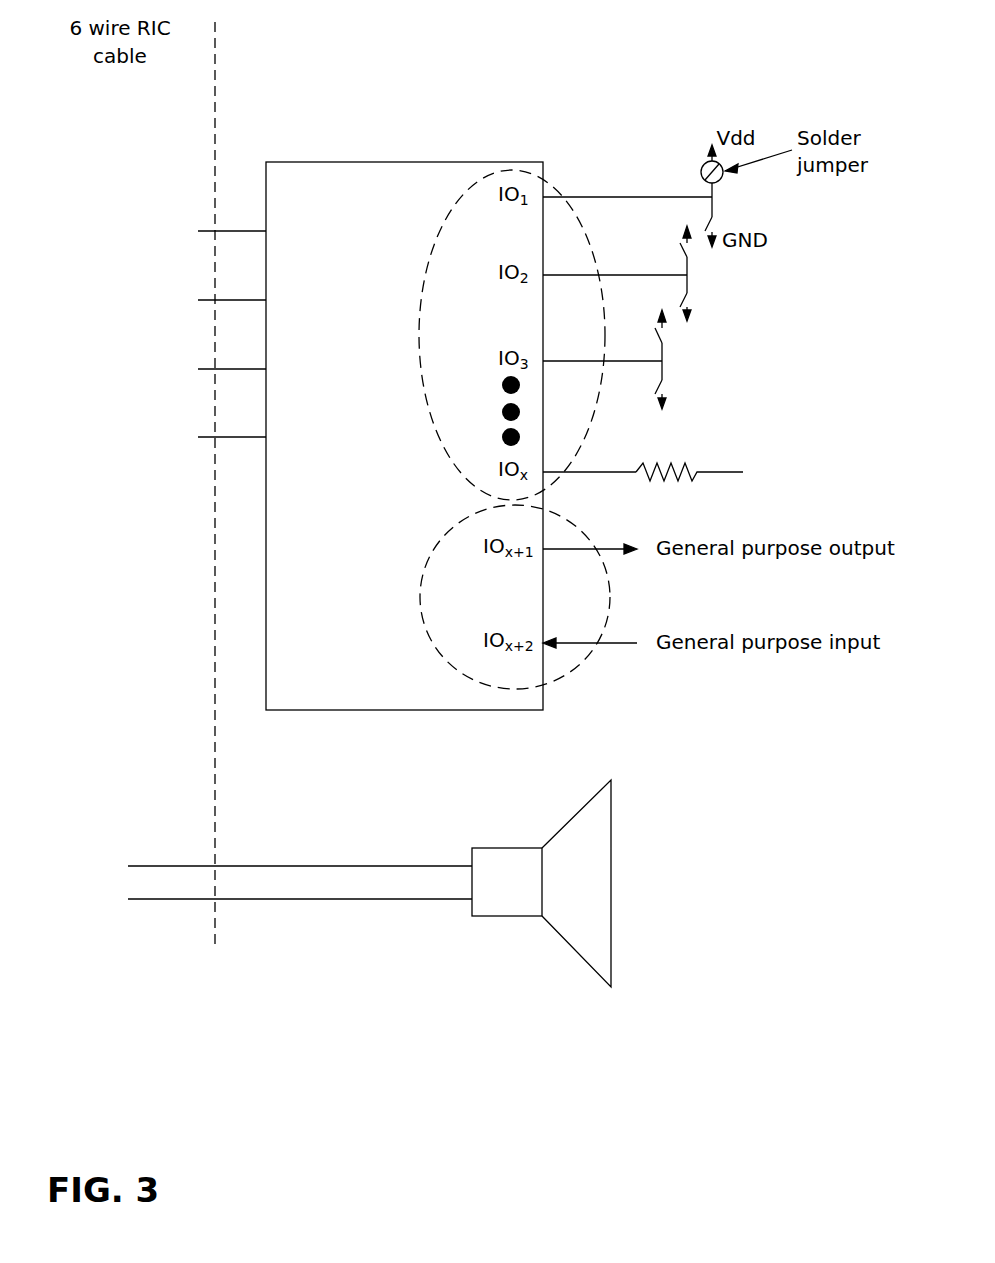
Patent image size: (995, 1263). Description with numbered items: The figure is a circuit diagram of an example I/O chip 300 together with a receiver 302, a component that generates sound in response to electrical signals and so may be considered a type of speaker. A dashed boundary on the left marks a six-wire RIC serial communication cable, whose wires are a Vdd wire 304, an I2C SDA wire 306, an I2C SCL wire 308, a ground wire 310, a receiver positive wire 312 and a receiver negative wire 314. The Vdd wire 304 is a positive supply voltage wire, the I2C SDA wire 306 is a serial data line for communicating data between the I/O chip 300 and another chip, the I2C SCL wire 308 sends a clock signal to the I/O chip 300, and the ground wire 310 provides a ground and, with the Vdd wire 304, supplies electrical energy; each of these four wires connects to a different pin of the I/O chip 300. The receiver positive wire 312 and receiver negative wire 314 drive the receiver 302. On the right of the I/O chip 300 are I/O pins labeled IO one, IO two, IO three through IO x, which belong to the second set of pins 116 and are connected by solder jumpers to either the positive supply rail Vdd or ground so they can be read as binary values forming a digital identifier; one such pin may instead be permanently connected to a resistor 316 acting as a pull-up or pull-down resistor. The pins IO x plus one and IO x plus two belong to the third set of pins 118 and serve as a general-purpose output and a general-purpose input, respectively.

The I/O chip 300 is at (402, 162).
The third set of pins 118 is at (518, 329).
The second set of pins 116 is at (610, 605).
The resistor 316 is at (688, 470).
The receiver 302 is at (612, 840).
The Vdd wire 304 is at (148, 256).
The I2C SDA wire 306 is at (148, 325).
The I2C SCL wire 308 is at (148, 394).
The ground wire 310 is at (148, 463).
The receiver positive wire 312 is at (114, 876).
The receiver negative wire 314 is at (110, 911).